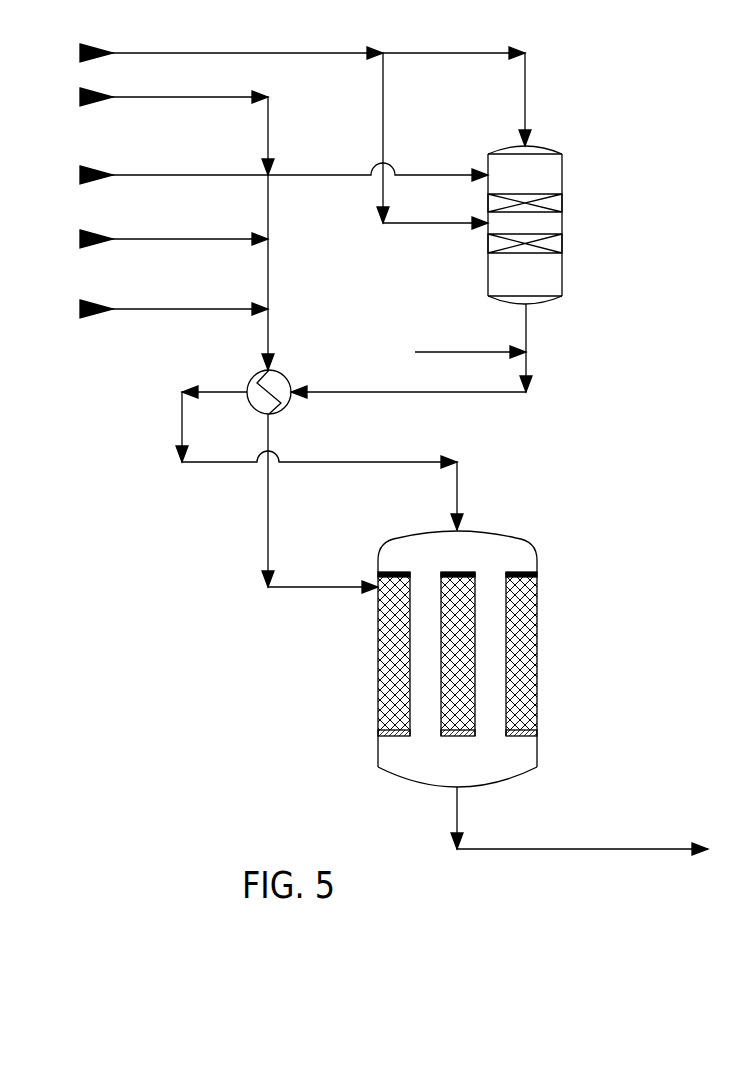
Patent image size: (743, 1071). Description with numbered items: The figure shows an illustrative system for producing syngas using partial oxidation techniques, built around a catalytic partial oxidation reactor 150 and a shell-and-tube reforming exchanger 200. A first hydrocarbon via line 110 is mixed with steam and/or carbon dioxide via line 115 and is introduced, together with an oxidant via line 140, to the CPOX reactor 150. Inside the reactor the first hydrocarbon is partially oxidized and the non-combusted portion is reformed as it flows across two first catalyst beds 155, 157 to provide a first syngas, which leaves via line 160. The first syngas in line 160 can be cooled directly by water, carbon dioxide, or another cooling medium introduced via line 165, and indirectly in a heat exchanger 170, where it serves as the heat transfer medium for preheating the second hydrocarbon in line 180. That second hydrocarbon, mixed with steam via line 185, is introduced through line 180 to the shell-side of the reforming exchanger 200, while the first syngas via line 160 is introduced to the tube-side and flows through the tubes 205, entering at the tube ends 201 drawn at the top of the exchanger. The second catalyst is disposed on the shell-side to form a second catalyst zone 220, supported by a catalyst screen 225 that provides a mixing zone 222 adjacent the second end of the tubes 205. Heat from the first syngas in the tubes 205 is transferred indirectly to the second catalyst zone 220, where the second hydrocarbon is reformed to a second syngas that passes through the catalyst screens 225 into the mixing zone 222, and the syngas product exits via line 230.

The first hydrocarbon line 110 is at (135, 175).
The steam and/or carbon dioxide line 115 is at (203, 100).
The oxidant line 140 is at (328, 53).
The catalytic partial oxidation (CPOX) reactor 150 is at (565, 170).
The first catalyst bed 155 is at (545, 207).
The first catalyst bed 157 is at (545, 246).
The first syngas line 160 is at (529, 337).
The cooling medium line 165 is at (443, 352).
The heat exchanger 170 is at (285, 370).
The second hydrocarbon line 180 is at (135, 239).
The steam line 185 is at (135, 309).
The reforming exchanger 200 is at (467, 643).
The tube inlet 201 is at (537, 575).
The tubes 205 is at (508, 617).
The second catalyst zone 220 is at (385, 667).
The mixing zone 222 is at (428, 768).
The catalyst screen 225 is at (540, 734).
The syngas product line 230 is at (648, 849).